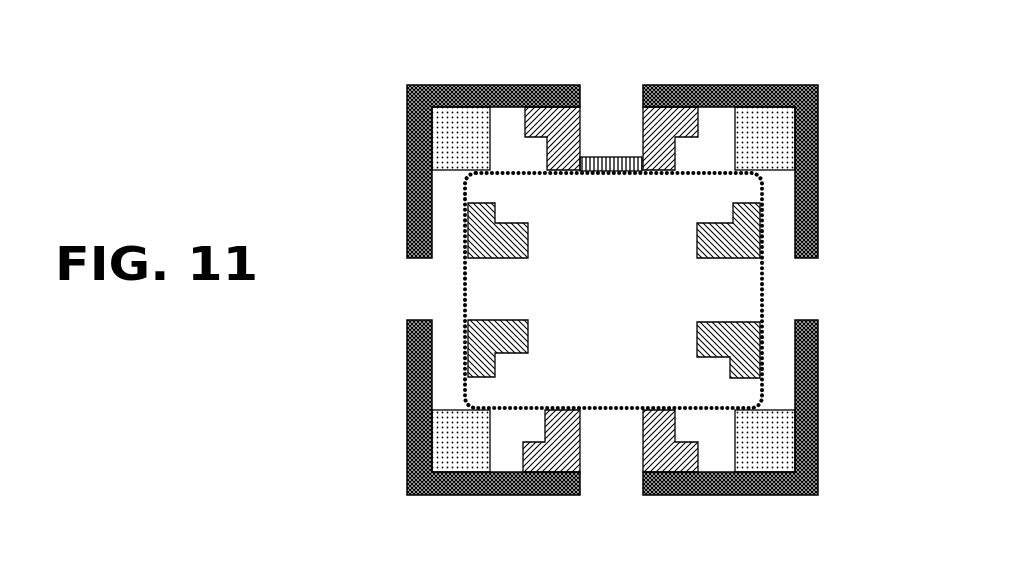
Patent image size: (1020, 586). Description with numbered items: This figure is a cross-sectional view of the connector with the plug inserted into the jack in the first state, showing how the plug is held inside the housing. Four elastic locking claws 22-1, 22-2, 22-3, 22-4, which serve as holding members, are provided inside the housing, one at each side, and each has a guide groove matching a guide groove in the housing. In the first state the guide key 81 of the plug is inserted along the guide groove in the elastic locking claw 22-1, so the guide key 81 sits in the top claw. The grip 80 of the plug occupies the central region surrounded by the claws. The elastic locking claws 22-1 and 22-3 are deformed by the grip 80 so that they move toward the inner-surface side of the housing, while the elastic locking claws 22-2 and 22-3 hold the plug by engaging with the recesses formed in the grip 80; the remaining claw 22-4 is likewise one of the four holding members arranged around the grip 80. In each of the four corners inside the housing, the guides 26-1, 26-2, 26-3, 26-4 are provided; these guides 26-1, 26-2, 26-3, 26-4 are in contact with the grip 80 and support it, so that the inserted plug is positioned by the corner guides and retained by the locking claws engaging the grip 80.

The elastic locking claw 22-1 is at (582, 124).
The elastic locking claw 22-2 is at (487, 259).
The elastic locking claw 22-3 is at (582, 443).
The elastic locking claw 22-4 is at (697, 340).
The guide 26-1 is at (459, 133).
The guide 26-2 is at (470, 450).
The guide 26-3 is at (762, 450).
The guide 26-4 is at (770, 130).
The grip 80 is at (757, 305).
The guide key 81 is at (617, 155).